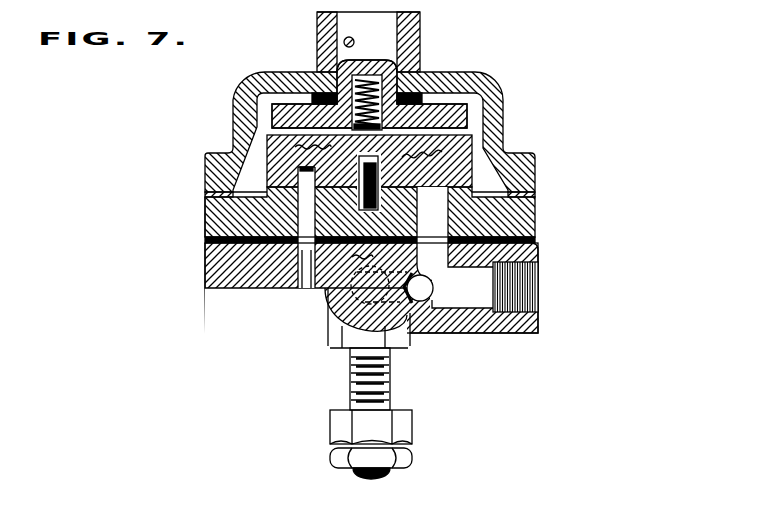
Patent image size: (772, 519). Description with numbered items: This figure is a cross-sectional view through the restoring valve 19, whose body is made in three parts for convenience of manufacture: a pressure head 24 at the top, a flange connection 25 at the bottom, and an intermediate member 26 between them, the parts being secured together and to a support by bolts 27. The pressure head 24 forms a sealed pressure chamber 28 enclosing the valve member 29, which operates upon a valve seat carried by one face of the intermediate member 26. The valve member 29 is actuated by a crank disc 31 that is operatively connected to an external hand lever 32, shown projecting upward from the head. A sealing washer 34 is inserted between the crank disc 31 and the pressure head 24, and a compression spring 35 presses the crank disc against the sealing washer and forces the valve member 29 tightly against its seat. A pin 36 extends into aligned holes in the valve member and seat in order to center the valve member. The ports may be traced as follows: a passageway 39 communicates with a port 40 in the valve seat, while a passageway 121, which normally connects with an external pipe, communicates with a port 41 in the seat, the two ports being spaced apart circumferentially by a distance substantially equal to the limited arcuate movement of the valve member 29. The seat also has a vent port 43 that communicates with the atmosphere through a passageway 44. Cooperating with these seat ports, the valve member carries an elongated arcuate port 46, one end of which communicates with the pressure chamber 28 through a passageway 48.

The valve unit 19 is at (206, 215).
The pressure head 24 is at (535, 172).
The flange connection 25 is at (537, 247).
The intermediate member 26 is at (528, 213).
The bolts 27 is at (388, 383).
The pressure chamber 28 is at (478, 123).
The valve member 29 is at (473, 143).
The crank disc 31 is at (453, 115).
The hand lever 32 is at (421, 33).
The sealing washer 34 is at (427, 97).
The compression spring 35 is at (373, 74).
The pin 36 is at (379, 172).
The passageway 39 is at (390, 298).
The port 40 is at (379, 276).
The port 41 is at (447, 228).
The vent port 43 is at (305, 215).
The passageway 44 is at (310, 283).
The arcuate port 46 is at (434, 154).
The passageway 48 is at (300, 149).
The passageway 121 is at (530, 280).